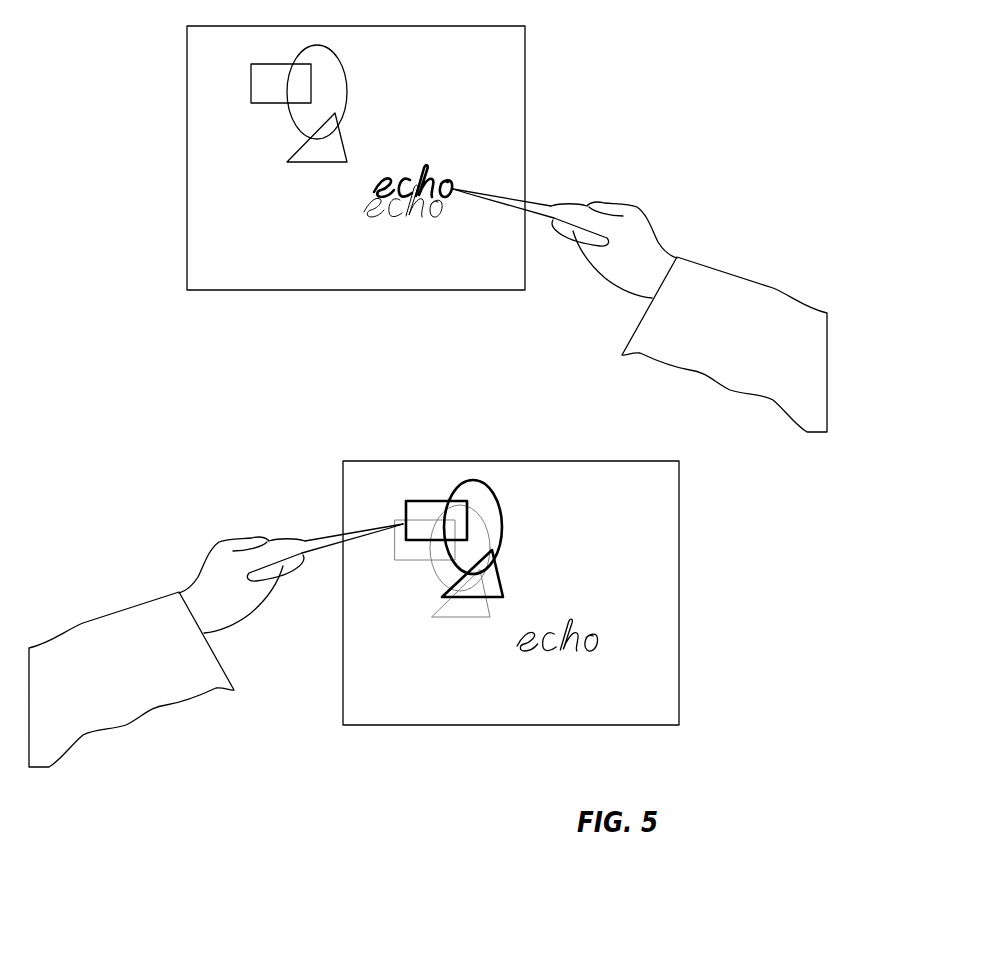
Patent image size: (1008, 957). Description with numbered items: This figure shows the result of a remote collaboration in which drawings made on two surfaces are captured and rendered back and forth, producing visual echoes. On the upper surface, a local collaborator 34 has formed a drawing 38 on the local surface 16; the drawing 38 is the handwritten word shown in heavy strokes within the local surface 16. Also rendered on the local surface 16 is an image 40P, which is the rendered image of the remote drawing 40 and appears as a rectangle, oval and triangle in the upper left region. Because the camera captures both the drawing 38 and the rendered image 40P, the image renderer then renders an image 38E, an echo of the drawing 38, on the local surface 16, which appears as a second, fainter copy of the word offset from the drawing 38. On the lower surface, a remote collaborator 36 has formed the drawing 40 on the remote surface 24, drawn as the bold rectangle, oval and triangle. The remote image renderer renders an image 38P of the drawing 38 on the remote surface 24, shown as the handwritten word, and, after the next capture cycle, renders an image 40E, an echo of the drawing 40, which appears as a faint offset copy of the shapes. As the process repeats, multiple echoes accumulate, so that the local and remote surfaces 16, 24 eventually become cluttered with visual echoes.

The local surface 16 is at (297, 282).
The image of drawing 40 40P is at (340, 58).
The drawing 38 is at (415, 177).
The echo of drawing 38 38E is at (425, 225).
The local collaborator 34 is at (637, 203).
The remote surface 24 is at (672, 540).
The drawing 40 is at (495, 493).
The echo of drawing 40 40E is at (473, 610).
The image of drawing 38 38P is at (560, 655).
The remote collaborator 36 is at (192, 688).